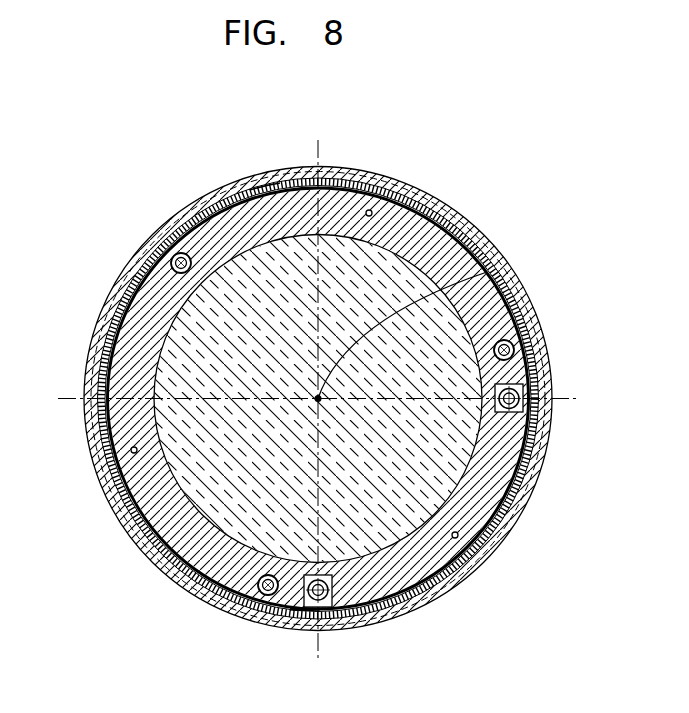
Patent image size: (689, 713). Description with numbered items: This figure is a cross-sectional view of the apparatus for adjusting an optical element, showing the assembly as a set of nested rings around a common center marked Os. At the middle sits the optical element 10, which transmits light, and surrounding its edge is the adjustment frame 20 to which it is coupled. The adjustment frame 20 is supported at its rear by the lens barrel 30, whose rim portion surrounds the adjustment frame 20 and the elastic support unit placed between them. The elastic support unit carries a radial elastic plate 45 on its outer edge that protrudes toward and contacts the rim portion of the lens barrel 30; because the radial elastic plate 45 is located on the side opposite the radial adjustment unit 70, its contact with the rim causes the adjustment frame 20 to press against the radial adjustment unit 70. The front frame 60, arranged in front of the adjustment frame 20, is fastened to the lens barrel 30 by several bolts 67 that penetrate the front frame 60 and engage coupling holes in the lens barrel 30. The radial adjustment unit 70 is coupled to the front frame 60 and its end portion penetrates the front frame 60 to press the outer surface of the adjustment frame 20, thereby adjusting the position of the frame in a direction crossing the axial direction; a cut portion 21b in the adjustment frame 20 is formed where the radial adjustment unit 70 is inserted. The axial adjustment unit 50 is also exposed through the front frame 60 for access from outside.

The optical element 10 is at (173, 353).
The adjustment frame 20 is at (190, 540).
The cut portion 21b is at (300, 609).
The lens barrel 30 is at (265, 181).
The radial elastic plate 45 is at (305, 190).
The axial adjustment unit 50 is at (373, 203).
The front frame 60 is at (214, 185).
The bolt 67 is at (172, 255).
The radial adjustment unit 70 is at (521, 396).
The spherical center Os is at (487, 272).